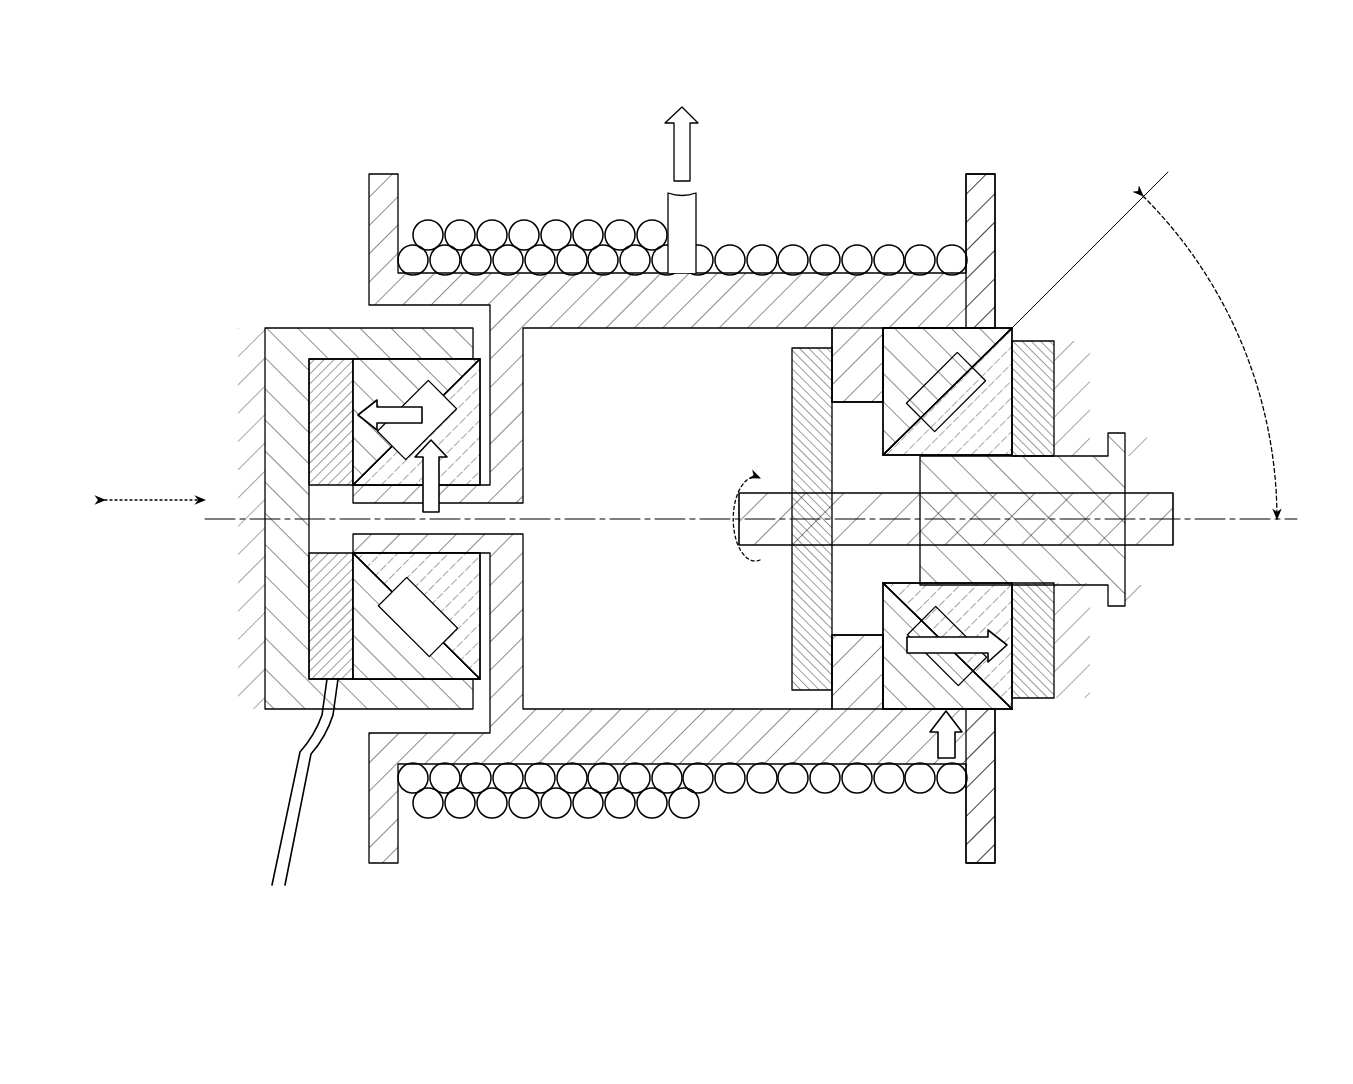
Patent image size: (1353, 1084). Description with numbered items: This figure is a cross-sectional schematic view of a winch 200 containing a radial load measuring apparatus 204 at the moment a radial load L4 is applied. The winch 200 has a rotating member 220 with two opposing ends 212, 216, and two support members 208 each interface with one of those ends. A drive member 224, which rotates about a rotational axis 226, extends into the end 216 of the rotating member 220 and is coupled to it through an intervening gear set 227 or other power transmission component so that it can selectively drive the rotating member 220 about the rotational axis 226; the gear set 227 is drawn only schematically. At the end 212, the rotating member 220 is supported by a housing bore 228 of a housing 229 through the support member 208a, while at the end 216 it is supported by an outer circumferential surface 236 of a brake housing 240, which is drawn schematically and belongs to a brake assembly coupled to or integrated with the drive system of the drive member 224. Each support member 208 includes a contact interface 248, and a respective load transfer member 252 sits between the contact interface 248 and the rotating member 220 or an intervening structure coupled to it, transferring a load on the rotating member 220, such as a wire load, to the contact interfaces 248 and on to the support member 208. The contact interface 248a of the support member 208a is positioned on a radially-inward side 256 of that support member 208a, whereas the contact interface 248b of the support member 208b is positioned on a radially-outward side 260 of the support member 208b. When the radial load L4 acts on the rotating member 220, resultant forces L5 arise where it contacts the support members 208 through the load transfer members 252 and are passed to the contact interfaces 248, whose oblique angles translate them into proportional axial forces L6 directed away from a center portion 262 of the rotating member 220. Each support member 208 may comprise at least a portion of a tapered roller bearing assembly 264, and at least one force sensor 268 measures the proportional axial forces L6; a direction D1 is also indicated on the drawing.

The winch 200 is at (1095, 92).
The radial load measuring apparatus 204 is at (1040, 322).
The support members 208 is at (681, 510).
The support member 208a is at (526, 496).
The support member 208b is at (880, 470).
The end of rotating member 212 is at (696, 500).
The end of rotating member 216 is at (1005, 270).
The rotating member 220 is at (987, 208).
The drive member 224 is at (1085, 568).
The rotational axis 226 is at (1200, 522).
The gear set 227 is at (805, 645).
The housing bore 228 is at (322, 660).
The housing 229 is at (300, 552).
The outer circumferential surface 236 is at (1035, 473).
The brake housing 240 is at (1110, 478).
The contact interface 248 is at (701, 482).
The contact interface 248a is at (613, 482).
The contact interface 248b is at (1030, 380).
The load transfer member 252 is at (470, 462).
The radially-inward side 256 is at (470, 392).
The radially-outward side 260 is at (965, 335).
The center portion 262 is at (726, 580).
The tapered roller bearing assembly 264 is at (863, 415).
The force sensor 268 is at (270, 375).
The radial load L4 is at (692, 152).
The resultant force L5 is at (420, 495).
The proportional axial force L6 is at (360, 414).
The direction D1 is at (160, 498).